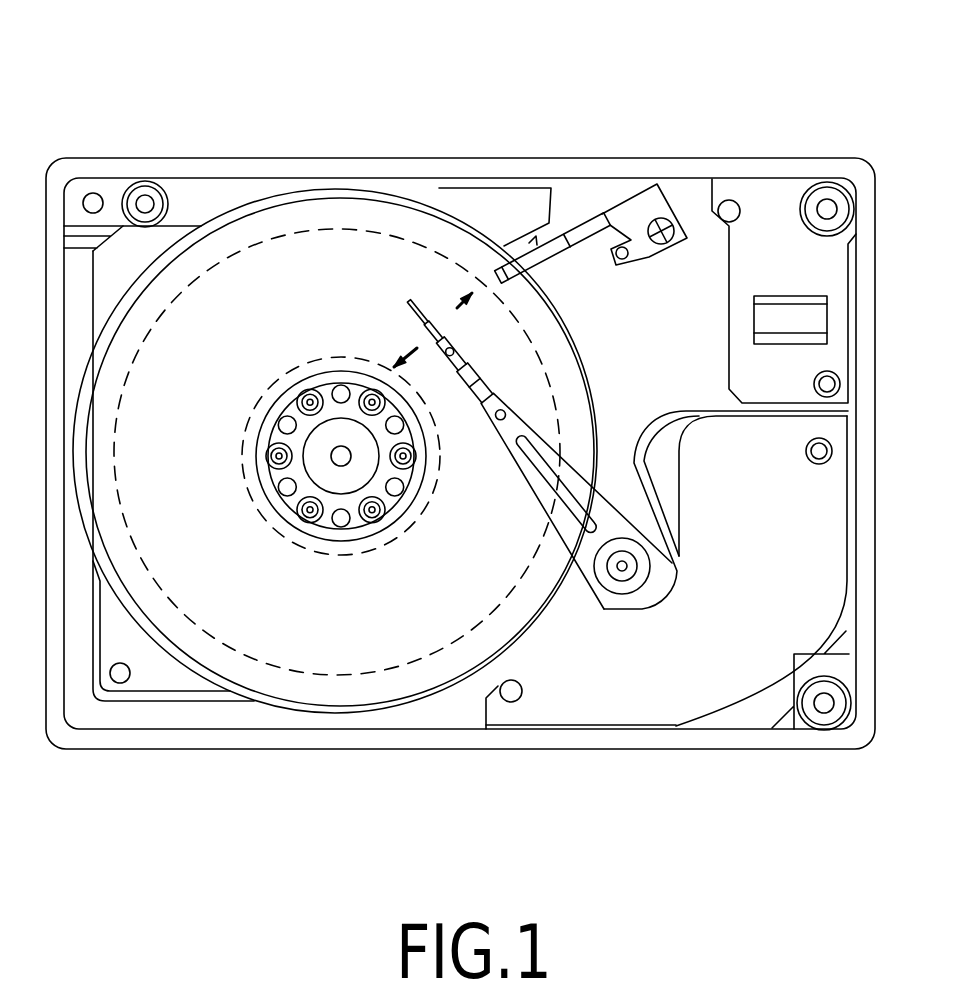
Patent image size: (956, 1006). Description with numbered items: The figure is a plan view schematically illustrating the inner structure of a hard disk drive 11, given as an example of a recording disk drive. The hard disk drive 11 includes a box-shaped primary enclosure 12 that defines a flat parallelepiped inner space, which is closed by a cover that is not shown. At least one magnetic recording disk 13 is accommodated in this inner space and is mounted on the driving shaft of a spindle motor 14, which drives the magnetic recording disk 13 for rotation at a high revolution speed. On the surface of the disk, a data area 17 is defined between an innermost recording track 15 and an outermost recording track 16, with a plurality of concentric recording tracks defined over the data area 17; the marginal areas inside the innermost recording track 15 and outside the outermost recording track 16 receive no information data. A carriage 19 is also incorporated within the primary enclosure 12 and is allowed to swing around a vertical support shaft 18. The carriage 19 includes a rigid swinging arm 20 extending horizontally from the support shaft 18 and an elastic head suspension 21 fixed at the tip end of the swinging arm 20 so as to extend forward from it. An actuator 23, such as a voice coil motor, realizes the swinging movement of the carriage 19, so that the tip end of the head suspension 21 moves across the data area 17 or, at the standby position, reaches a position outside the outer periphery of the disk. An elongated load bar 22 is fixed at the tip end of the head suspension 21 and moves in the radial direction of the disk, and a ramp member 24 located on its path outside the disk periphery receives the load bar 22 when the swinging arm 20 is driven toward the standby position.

The hard disk drive 11 is at (466, 111).
The primary enclosure 12 is at (340, 749).
The magnetic recording disk 13 is at (571, 337).
The spindle motor 14 is at (313, 466).
The innermost recording track 15 is at (270, 388).
The outermost recording track 16 is at (147, 558).
The data area 17 is at (272, 622).
The support shaft 18 is at (632, 577).
The carriage 19 is at (475, 455).
The swinging arm 20 is at (541, 491).
The head suspension 21 is at (458, 344).
The load bar 22 is at (408, 305).
The actuator 23 is at (743, 714).
The ramp member 24 is at (553, 232).